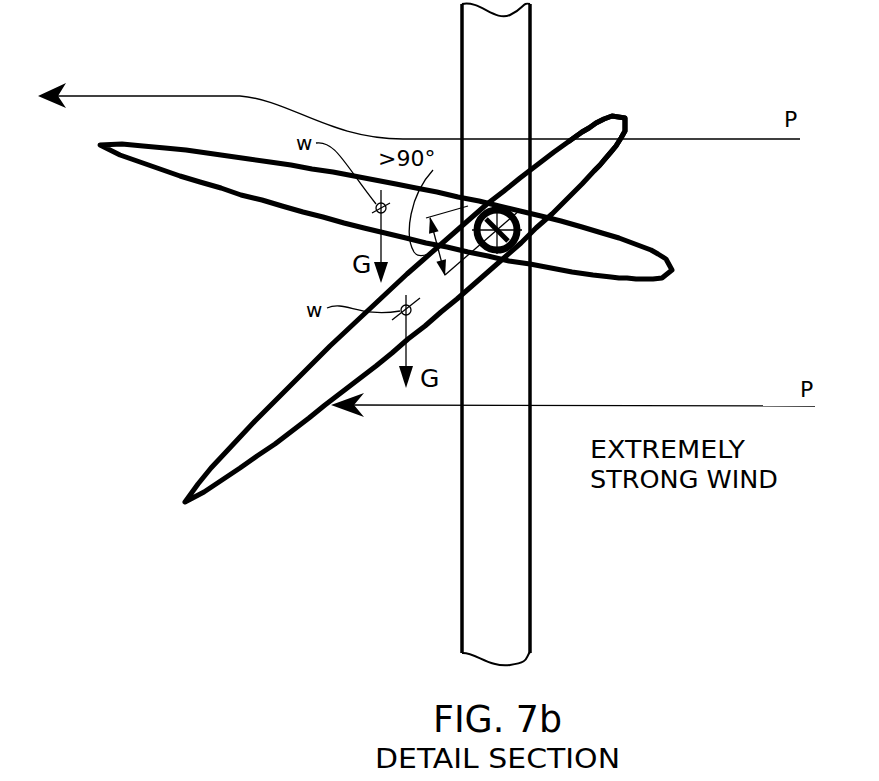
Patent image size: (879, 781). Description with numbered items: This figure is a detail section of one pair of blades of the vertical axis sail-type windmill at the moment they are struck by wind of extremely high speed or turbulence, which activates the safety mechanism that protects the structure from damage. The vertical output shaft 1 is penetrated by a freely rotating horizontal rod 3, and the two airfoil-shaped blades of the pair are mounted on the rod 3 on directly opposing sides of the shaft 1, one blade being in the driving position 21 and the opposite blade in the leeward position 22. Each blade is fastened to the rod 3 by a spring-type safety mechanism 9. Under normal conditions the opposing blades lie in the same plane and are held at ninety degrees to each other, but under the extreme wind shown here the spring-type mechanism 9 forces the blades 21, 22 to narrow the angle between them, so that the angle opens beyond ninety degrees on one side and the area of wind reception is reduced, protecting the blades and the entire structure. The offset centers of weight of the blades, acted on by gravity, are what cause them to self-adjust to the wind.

The vertical output shaft 1 is at (508, 40).
The horizontal rod 3 is at (533, 243).
The spring-type safety mechanism 9 is at (630, 120).
The blade in driving position 21 is at (590, 170).
The blade in leeward position 22 is at (100, 146).